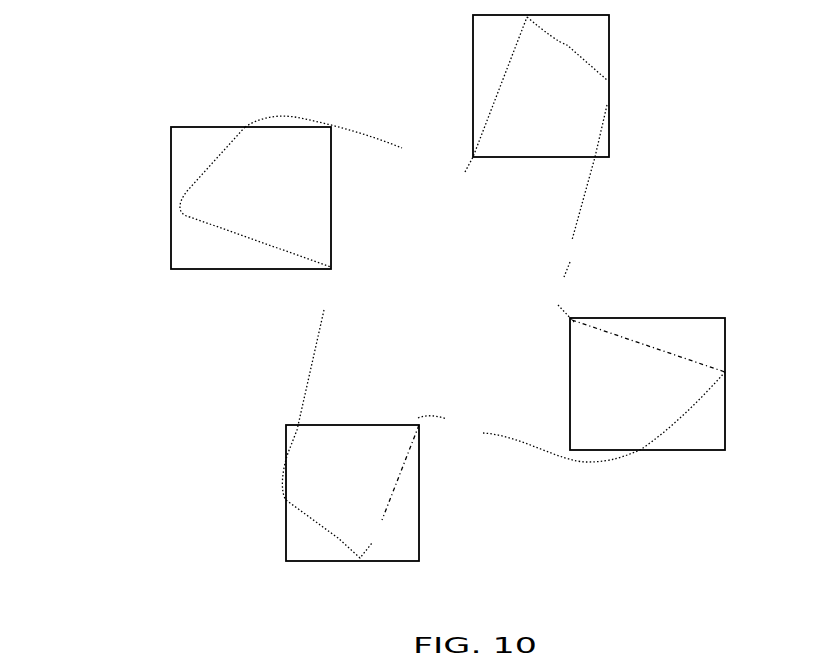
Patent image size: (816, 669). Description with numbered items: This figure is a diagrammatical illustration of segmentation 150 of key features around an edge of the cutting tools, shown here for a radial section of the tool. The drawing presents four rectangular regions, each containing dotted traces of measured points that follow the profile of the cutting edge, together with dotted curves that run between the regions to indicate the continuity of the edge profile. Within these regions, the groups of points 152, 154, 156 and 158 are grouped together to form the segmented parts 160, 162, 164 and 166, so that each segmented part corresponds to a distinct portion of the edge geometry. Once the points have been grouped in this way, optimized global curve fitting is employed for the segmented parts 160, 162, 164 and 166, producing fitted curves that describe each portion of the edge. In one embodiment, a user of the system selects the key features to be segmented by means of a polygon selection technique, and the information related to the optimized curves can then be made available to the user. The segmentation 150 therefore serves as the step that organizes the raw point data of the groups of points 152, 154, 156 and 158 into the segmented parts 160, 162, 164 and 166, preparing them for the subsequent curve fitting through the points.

The segmentation 150 is at (133, 45).
The group of points 152 is at (567, 45).
The group of points 154 is at (233, 269).
The group of points 156 is at (337, 538).
The group of points 158 is at (697, 408).
The segmented part 160 is at (605, 157).
The segmented part 162 is at (190, 180).
The segmented part 164 is at (286, 530).
The segmented part 166 is at (700, 450).